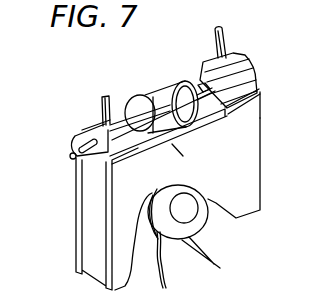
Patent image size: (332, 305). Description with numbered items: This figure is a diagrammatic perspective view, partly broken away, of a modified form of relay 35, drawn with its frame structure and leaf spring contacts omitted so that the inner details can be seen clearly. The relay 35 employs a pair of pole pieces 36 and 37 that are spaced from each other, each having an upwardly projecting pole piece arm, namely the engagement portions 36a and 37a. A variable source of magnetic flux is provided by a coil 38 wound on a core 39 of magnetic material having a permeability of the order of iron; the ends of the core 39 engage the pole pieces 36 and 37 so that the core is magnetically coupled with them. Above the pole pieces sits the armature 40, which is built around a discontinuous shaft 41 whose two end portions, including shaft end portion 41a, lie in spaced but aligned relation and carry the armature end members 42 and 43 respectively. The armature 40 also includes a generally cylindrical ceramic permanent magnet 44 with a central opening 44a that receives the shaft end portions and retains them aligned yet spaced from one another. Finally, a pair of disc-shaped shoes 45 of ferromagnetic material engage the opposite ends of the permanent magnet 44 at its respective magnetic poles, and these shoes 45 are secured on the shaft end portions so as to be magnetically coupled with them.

The relay 35 is at (263, 137).
The pole piece 36 is at (249, 193).
The pole piece arm 36a is at (261, 100).
The pole piece 37 is at (88, 223).
The pole piece arm 37a is at (75, 162).
The coil 38 is at (206, 229).
The core 39 is at (182, 206).
The armature 40 is at (244, 50).
The discontinuous shaft 41 is at (198, 86).
The shaft end portion 41a is at (126, 121).
The armature end member 42 is at (88, 130).
The armature end member 43 is at (241, 62).
The ceramic permanent magnet 44 is at (174, 93).
The central opening 44a is at (198, 155).
The disc-shaped shoe 45 is at (197, 87).